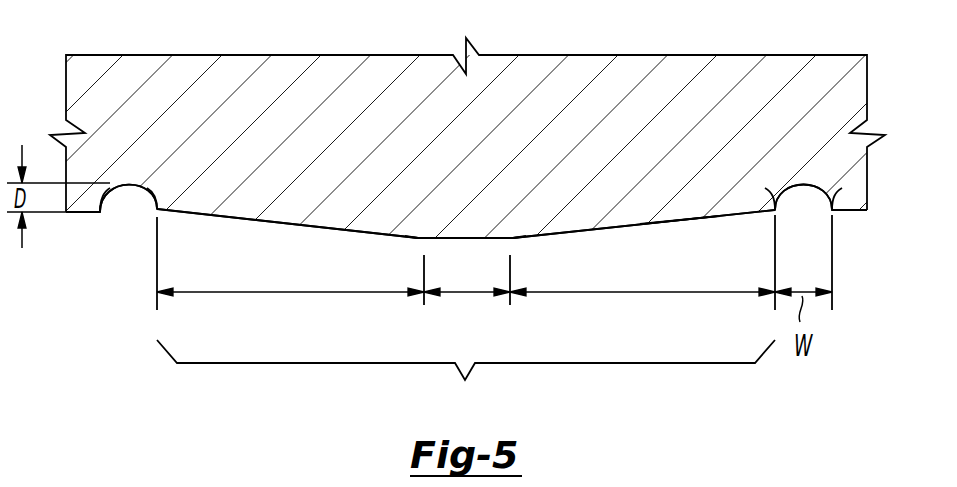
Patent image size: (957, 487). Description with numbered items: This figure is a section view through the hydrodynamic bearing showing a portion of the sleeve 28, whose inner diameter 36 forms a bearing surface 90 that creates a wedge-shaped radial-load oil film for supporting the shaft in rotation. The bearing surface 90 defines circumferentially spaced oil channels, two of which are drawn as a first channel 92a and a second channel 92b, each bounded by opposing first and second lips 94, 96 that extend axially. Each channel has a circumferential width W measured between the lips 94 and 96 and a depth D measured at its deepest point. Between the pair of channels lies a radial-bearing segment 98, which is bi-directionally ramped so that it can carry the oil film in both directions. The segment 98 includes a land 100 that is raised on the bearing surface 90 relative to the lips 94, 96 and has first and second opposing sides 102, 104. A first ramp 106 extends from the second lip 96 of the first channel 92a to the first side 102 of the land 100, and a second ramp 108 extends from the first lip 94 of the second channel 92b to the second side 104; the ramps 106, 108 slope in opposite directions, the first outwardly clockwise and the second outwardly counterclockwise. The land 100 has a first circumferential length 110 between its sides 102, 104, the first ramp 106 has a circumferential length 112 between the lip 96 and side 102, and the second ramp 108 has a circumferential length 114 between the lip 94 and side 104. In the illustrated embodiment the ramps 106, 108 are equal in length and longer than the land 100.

The sleeve 28 is at (625, 75).
The inner diameter 36 is at (678, 220).
The bearing surface 90 is at (236, 217).
The first channel 92a is at (128, 185).
The second channel 92b is at (805, 185).
The first lip 94 is at (100, 215).
The second lip 96 is at (157, 209).
The radial-bearing segment 98 is at (466, 376).
The land 100 is at (466, 238).
The first side 102 is at (418, 239).
The second side 104 is at (513, 238).
The first ramp 106 is at (290, 224).
The second ramp 108 is at (623, 227).
The first circumferential length 110 is at (467, 294).
The circumferential length 112 is at (292, 296).
The circumferential length 114 is at (644, 296).